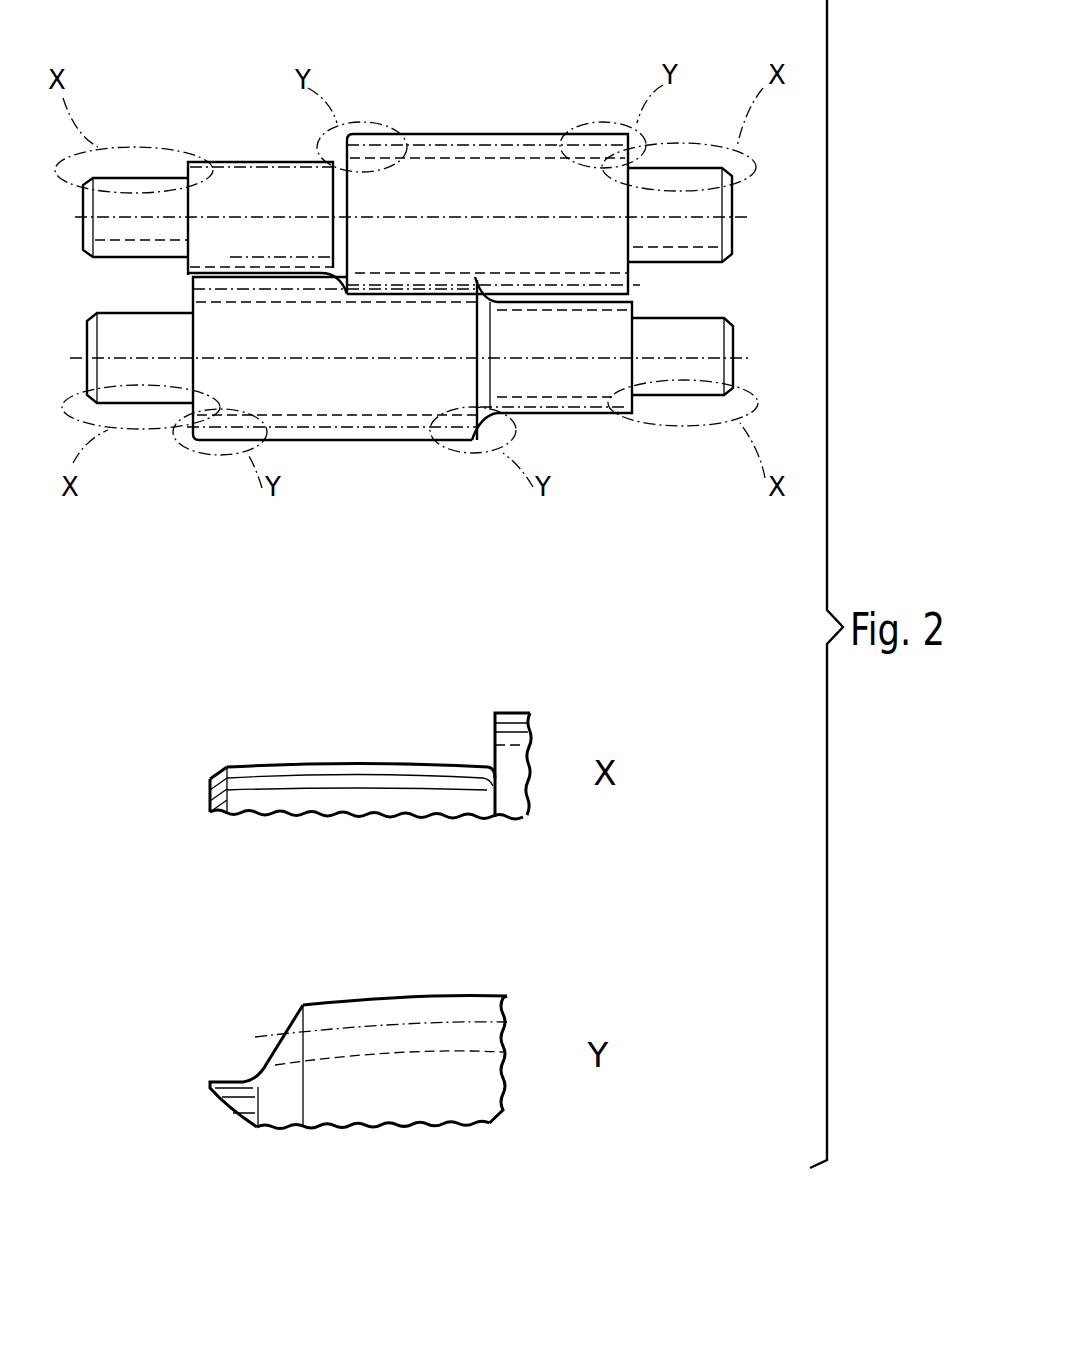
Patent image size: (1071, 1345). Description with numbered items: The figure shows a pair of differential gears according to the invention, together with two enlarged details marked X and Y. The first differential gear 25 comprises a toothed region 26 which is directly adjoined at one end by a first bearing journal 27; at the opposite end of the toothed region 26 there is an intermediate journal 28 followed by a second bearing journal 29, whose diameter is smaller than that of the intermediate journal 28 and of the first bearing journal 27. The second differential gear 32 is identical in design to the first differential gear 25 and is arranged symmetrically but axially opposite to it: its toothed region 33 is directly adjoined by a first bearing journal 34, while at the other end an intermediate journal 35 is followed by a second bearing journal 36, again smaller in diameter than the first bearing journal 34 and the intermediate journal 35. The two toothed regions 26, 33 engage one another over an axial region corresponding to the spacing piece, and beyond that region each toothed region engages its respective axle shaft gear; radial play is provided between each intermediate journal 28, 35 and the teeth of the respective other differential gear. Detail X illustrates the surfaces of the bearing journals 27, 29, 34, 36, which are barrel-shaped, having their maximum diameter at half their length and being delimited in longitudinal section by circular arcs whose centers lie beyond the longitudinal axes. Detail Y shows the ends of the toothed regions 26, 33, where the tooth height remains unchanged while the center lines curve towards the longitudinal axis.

The first differential gear 25 is at (443, 112).
The toothed region 26 is at (513, 140).
The first bearing journal 27 is at (687, 200).
The intermediate journal 28 is at (248, 185).
The second bearing journal 29 is at (147, 202).
The second differential gear 32 is at (328, 463).
The toothed region 33 is at (390, 430).
The first bearing journal 34 is at (153, 370).
The intermediate journal 35 is at (582, 383).
The second bearing journal 36 is at (690, 368).